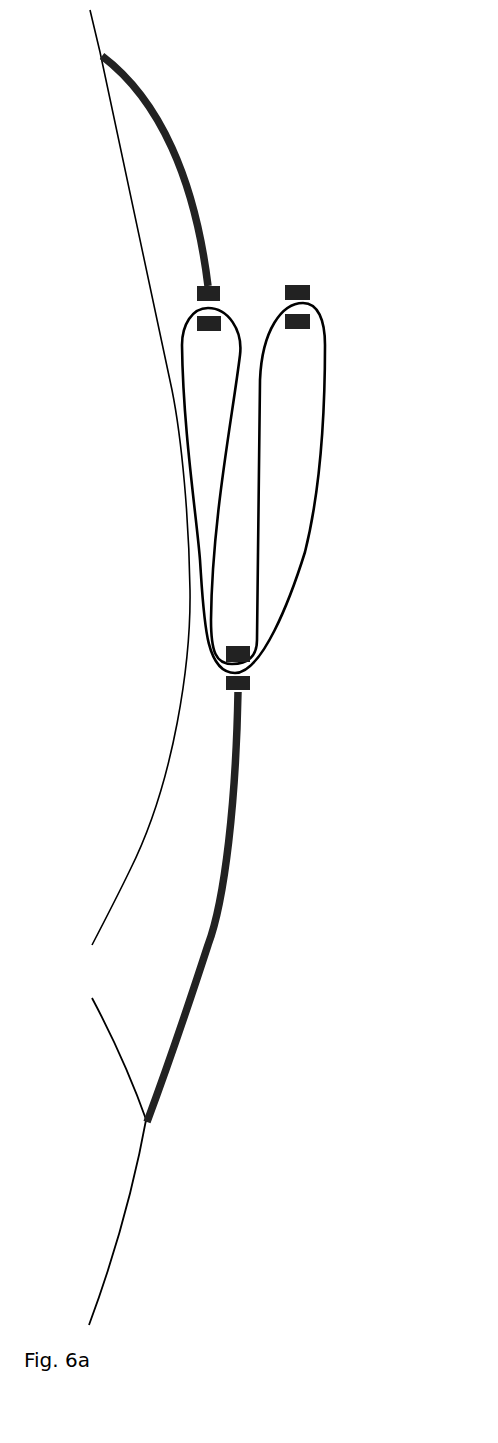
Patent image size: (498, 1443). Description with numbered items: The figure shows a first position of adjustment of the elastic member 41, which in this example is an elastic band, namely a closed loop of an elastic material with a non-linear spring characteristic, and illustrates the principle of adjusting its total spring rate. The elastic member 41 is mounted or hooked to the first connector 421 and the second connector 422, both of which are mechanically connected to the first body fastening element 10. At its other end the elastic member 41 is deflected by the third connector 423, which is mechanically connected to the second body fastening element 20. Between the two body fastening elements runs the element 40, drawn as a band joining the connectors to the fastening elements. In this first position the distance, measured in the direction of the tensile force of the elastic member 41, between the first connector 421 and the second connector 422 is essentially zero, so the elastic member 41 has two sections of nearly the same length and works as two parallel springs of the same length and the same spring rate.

The first body fastening element 10 is at (100, 52).
The second body fastening element 20 is at (132, 1208).
The cable / tendon 40 is at (213, 945).
The elastic member 41 is at (304, 552).
The first connector 421 is at (214, 288).
The second connector 422 is at (302, 286).
The third connector 423 is at (238, 766).